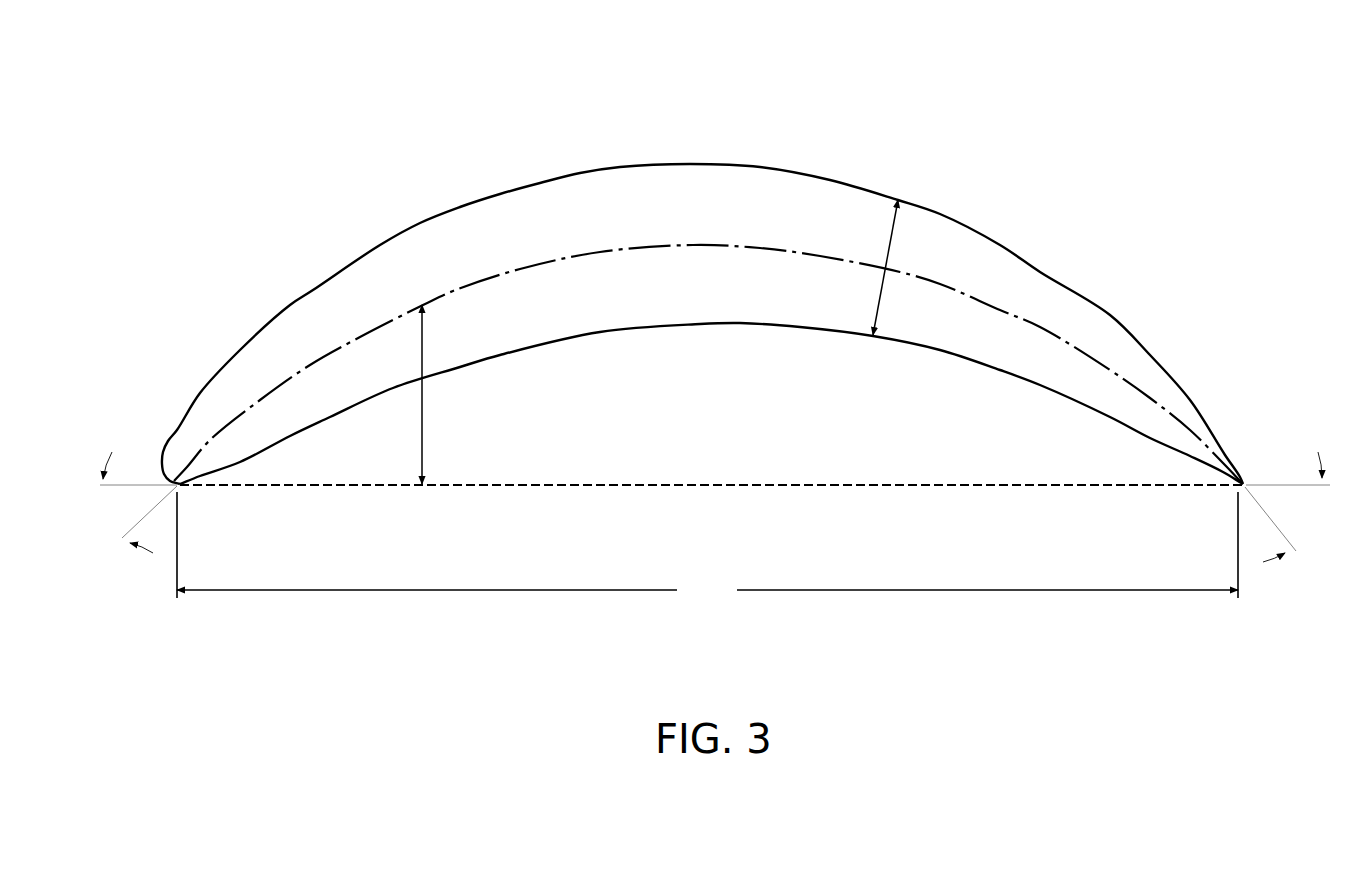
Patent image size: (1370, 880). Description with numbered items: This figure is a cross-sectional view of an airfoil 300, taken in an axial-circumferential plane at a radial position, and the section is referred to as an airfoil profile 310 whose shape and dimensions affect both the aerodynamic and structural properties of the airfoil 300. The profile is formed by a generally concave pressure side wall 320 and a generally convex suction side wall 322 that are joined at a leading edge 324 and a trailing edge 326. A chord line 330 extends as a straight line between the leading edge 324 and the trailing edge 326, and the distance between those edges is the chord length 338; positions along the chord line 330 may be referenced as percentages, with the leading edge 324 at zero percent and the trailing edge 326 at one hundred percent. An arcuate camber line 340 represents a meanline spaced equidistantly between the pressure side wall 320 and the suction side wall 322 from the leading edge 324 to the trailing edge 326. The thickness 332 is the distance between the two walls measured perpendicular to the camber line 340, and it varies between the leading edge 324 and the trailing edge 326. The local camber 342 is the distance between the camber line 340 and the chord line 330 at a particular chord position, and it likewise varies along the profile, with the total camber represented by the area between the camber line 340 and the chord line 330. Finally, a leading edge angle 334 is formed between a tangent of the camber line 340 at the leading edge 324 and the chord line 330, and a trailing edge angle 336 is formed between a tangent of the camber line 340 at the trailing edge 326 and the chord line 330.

The airfoil 300 is at (702, 261).
The airfoil profile 310 is at (704, 312).
The pressure side wall 320 is at (693, 329).
The suction side wall 322 is at (683, 165).
The leading edge 324 is at (189, 487).
The trailing edge 326 is at (1236, 489).
The chord line 330 is at (832, 486).
The thickness 332 is at (889, 243).
The leading edge angle 334 is at (131, 502).
The trailing edge angle 336 is at (1293, 507).
The chord length 338 is at (707, 549).
The camber line 340 is at (949, 288).
The local camber 342 is at (423, 400).